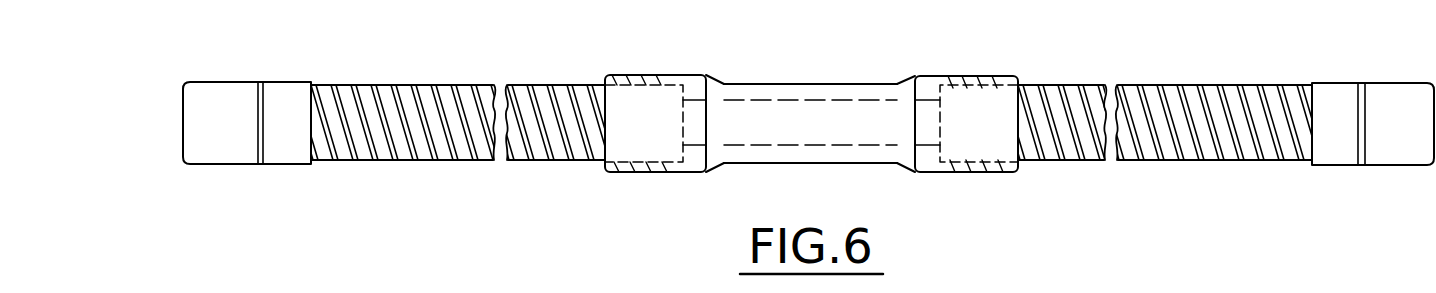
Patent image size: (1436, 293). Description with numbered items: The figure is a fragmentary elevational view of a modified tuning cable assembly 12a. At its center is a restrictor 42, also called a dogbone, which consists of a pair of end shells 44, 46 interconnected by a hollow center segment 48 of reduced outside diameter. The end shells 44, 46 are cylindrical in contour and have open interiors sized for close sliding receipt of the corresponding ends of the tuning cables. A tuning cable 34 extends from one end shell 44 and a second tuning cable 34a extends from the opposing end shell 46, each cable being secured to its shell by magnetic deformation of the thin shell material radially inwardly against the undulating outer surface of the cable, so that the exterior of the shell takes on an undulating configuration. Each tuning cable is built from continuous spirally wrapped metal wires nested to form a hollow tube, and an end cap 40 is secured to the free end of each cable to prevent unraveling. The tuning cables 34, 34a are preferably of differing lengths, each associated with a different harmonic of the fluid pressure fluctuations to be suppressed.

The modified tuning cable assembly 12a is at (1104, 44).
The tuning cable 34 is at (1175, 92).
The tuning cable 34a is at (438, 88).
The end cap 40 is at (227, 88).
The restrictor 42 is at (842, 80).
The end shell 44 is at (980, 75).
The end shell 46 is at (647, 80).
The hollow center segment 48 is at (760, 90).